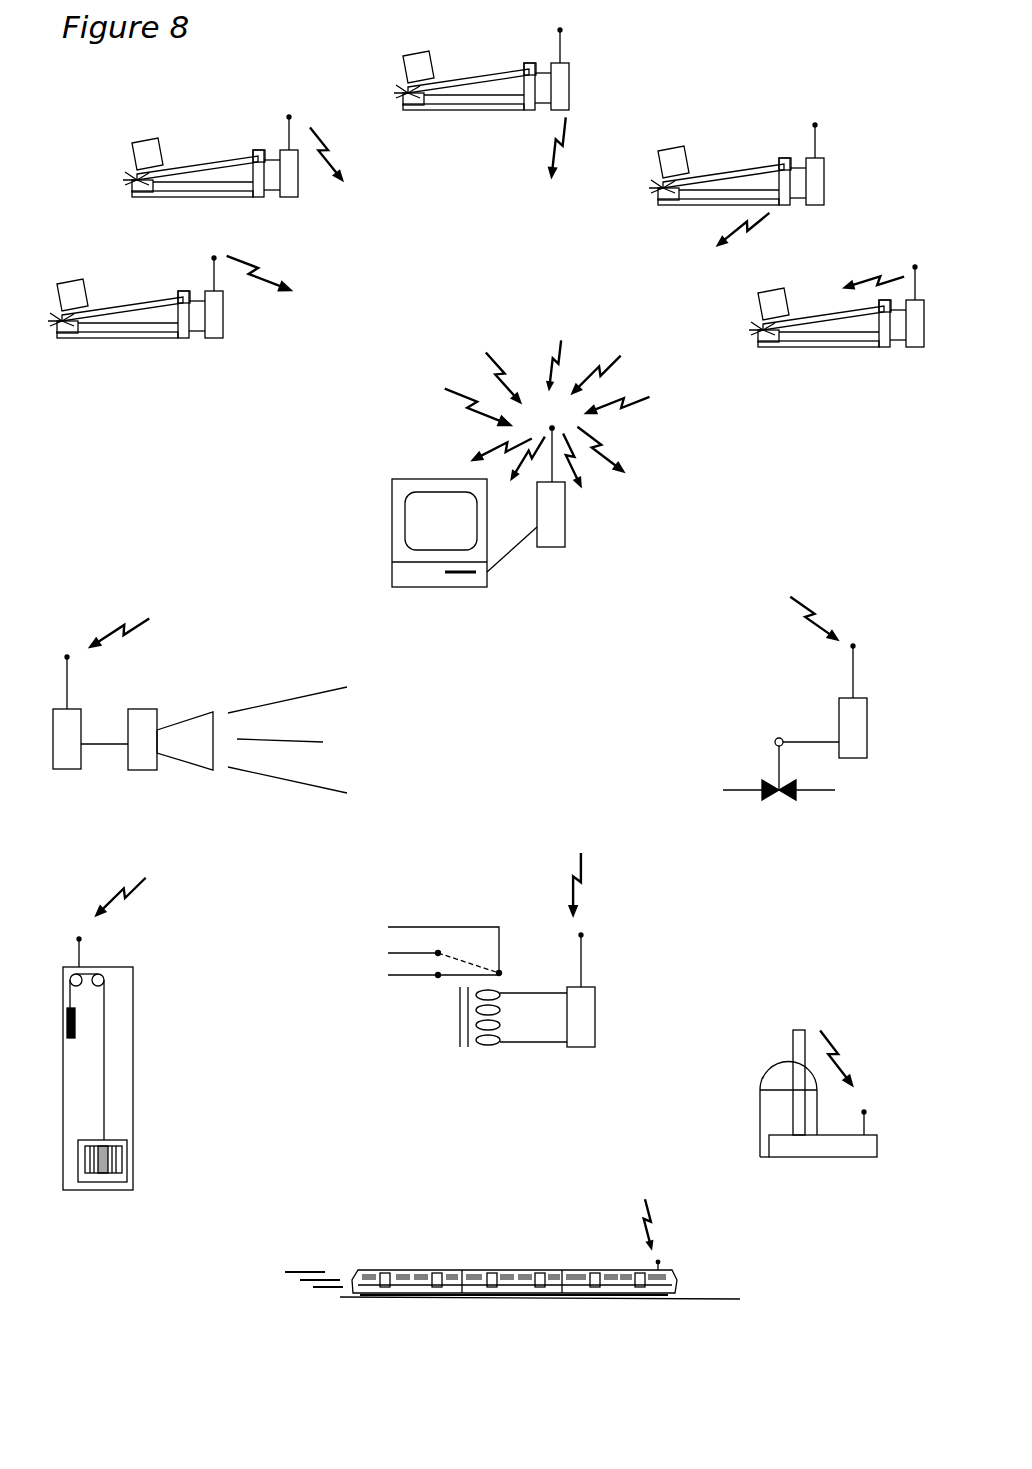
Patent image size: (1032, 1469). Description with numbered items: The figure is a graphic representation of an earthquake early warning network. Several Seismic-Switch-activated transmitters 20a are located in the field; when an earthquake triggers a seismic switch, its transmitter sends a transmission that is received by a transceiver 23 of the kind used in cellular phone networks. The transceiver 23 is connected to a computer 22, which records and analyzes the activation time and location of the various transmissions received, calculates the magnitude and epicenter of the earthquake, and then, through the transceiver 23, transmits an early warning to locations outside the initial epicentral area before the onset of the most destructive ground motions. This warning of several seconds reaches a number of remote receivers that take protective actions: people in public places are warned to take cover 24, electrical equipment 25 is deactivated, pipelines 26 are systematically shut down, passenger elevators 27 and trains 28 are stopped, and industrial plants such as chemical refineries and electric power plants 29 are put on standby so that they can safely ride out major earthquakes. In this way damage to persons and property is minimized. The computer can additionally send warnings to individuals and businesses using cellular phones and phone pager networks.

The Seismic-Switch-activated transmitter 20a is at (210, 148).
The computer 22 is at (420, 533).
The transceiver 23 is at (546, 499).
The take cover warning 24 is at (218, 700).
The electrical equipment 25 is at (476, 950).
The pipeline 26 is at (795, 698).
The passenger elevator 27 is at (178, 1029).
The train 28 is at (512, 1249).
The industrial plant 29 is at (821, 1087).